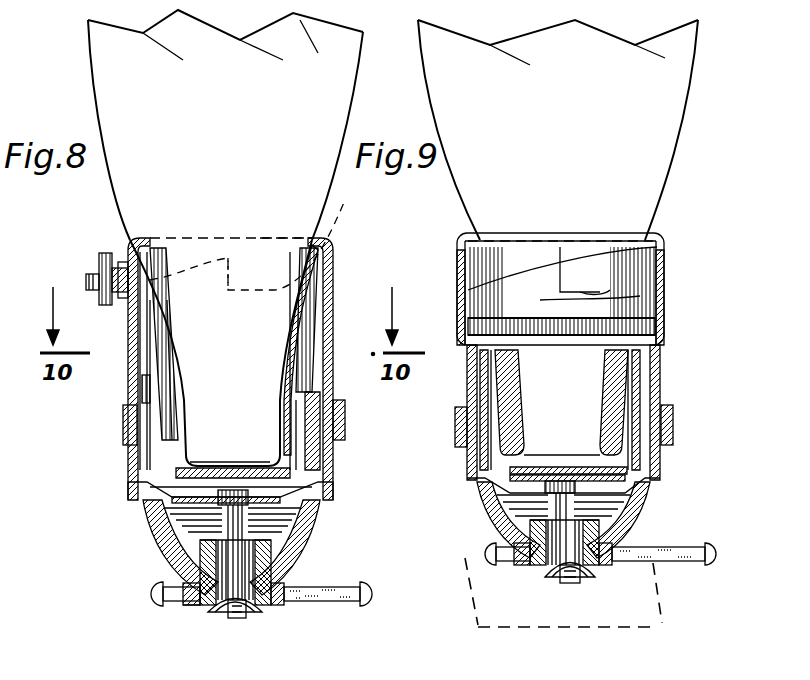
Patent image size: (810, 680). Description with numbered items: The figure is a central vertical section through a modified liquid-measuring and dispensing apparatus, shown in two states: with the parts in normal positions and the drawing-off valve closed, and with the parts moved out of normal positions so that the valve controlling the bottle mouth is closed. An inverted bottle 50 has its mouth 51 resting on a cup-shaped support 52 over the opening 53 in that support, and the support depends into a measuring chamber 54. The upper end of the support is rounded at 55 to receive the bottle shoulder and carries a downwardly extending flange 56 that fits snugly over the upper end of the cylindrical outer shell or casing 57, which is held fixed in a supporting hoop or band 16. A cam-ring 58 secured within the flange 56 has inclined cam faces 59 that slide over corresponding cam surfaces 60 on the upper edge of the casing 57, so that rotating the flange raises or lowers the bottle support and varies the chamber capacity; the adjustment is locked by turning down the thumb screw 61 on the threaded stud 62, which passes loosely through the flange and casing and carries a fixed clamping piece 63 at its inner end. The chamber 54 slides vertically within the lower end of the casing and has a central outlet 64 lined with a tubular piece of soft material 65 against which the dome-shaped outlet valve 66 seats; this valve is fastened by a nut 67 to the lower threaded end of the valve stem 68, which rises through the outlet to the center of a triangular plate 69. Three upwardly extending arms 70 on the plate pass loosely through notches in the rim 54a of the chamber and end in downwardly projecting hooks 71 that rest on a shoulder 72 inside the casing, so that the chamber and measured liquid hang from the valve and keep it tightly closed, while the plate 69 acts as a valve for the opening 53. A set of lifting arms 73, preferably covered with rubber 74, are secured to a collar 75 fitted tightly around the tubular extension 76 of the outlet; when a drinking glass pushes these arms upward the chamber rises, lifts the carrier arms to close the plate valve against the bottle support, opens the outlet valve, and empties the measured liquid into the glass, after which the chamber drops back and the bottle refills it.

In FIG. 9, the supporting hoop or band 16 is at (676, 410).
In FIG. 8, the inverted bottle 50 is at (92, 60).
In FIG. 9, the inverted bottle 50 is at (675, 102).
In FIG. 8, the mouth 51 is at (192, 460).
In FIG. 9, the mouth 51 is at (550, 452).
In FIG. 8, the cup-shaped support 52 is at (175, 420).
In FIG. 9, the cup-shaped support 52 is at (495, 395).
In FIG. 8, the opening 53 is at (150, 488).
In FIG. 9, the opening 53 is at (512, 500).
In FIG. 8, the measuring chamber 54 is at (148, 527).
In FIG. 9, the measuring chamber 54 is at (506, 494).
In FIG. 8, the rim 54a is at (330, 375).
In FIG. 8, the rounded upper end 55 is at (313, 238).
In FIG. 8, the downwardly extending flange 56 is at (130, 322).
In FIG. 9, the downwardly extending flange 56 is at (465, 290).
In FIG. 8, the cylindrical outer shell or casing 57 is at (140, 392).
In FIG. 9, the cylindrical outer shell or casing 57 is at (470, 326).
In FIG. 8, the cam-ring 58 is at (260, 234).
In FIG. 9, the cam-ring 58 is at (603, 257).
In FIG. 8, the inclined cam faces 59 is at (330, 248).
In FIG. 9, the inclined cam faces 59 is at (598, 286).
In FIG. 8, the cam surfaces 60 is at (312, 268).
In FIG. 9, the cam surfaces 60 is at (618, 294).
In FIG. 8, the thumb screw 61 is at (106, 253).
In FIG. 8, the threaded stud 62 is at (88, 277).
In FIG. 8, the clamping piece 63 is at (130, 245).
In FIG. 8, the outlet 64 is at (300, 572).
In FIG. 9, the outlet 64 is at (583, 565).
In FIG. 8, the tubular piece of soft material 65 is at (272, 606).
In FIG. 9, the tubular piece of soft material 65 is at (545, 565).
In FIG. 8, the outlet valve 66 is at (250, 614).
In FIG. 9, the outlet valve 66 is at (592, 582).
In FIG. 8, the nut 67 is at (240, 610).
In FIG. 9, the nut 67 is at (566, 588).
In FIG. 8, the valve stem 68 is at (300, 538).
In FIG. 9, the valve stem 68 is at (576, 505).
In FIG. 8, the triangular shaped plate 69 is at (265, 508).
In FIG. 9, the triangular shaped plate 69 is at (600, 486).
In FIG. 8, the upwardly extending arms 70 is at (160, 447).
In FIG. 9, the upwardly extending arms 70 is at (567, 478).
In FIG. 8, the downwardly projecting hooks 71 is at (140, 380).
In FIG. 9, the downwardly projecting hooks 71 is at (478, 386).
In FIG. 8, the shoulder 72 is at (346, 432).
In FIG. 9, the shoulder 72 is at (674, 448).
In FIG. 8, the lifting arms 73 is at (372, 590).
In FIG. 9, the lifting arms 73 is at (490, 548).
In FIG. 8, the rubber 74 is at (360, 604).
In FIG. 9, the rubber 74 is at (692, 560).
In FIG. 8, the collar 75 is at (195, 610).
In FIG. 9, the collar 75 is at (520, 560).
In FIG. 8, the tubular extension 76 is at (200, 608).